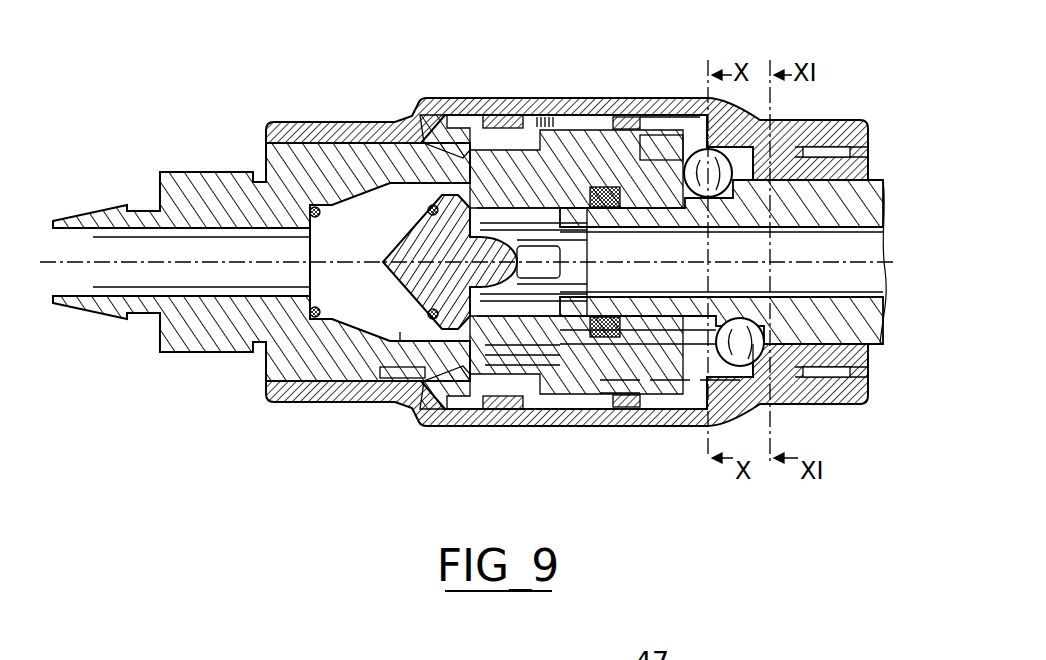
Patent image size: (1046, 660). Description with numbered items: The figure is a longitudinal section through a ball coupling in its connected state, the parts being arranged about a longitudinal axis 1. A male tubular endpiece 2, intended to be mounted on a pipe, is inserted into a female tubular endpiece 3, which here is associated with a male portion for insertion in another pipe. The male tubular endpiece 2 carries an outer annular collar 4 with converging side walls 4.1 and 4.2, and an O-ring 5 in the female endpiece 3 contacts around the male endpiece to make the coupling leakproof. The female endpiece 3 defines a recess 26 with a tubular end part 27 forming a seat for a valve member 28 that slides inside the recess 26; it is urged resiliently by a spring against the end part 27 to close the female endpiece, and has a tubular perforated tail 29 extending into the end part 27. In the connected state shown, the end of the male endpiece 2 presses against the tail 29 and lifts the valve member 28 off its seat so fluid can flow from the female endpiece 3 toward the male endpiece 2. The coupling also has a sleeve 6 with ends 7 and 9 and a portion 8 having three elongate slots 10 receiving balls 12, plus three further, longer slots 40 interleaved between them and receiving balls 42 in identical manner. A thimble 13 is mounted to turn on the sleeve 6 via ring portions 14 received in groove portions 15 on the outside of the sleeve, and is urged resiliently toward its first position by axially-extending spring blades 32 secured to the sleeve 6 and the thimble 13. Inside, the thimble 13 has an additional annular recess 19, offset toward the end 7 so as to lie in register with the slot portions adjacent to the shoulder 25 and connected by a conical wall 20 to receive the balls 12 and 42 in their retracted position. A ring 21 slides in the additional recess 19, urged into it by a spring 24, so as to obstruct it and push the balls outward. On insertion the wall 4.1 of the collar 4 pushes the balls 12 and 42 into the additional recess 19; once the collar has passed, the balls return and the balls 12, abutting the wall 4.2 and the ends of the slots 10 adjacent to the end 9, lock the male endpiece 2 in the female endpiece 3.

The longitudinal axis 1 is at (106, 262).
The male tubular endpiece 2 is at (862, 206).
The female tubular endpiece 3 is at (362, 104).
The outer annular collar 4 is at (657, 395).
The side wall 4.1 is at (614, 407).
The side wall 4.2 is at (664, 395).
The O-ring 5 is at (624, 160).
The sleeve 6 is at (446, 126).
The end 7 is at (490, 114).
The portion 8 is at (748, 148).
The end 9 is at (840, 122).
The elongate slots 10 is at (668, 192).
The balls 12 is at (720, 193).
The thimble 13 is at (444, 433).
The ring portions 14 is at (828, 150).
The groove portions 15 is at (812, 122).
The additional recess 19 is at (625, 400).
The conical wall 20 is at (722, 370).
The ring 21 is at (690, 132).
The spring 24 is at (582, 128).
The shoulder 25 is at (633, 132).
The recess 26 is at (397, 330).
The tubular end part 27 is at (562, 123).
The valve member 28 is at (425, 368).
The tubular perforated tail 29 is at (505, 372).
The spring blades 32 is at (660, 116).
The elongate slots 40 is at (810, 374).
The balls 42 is at (747, 372).